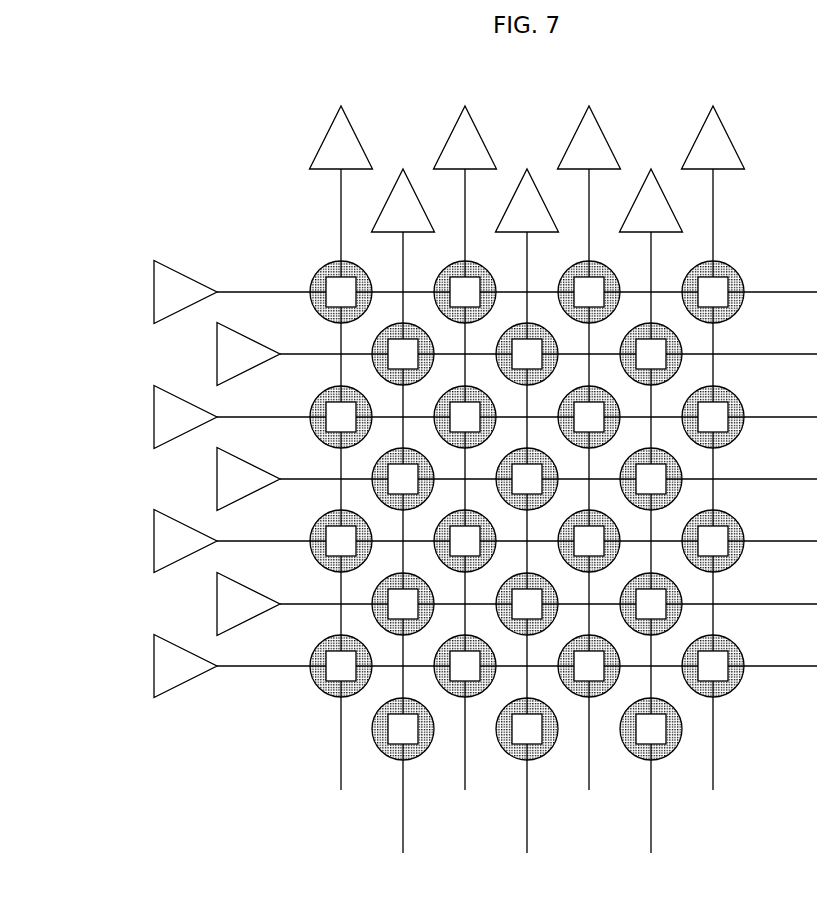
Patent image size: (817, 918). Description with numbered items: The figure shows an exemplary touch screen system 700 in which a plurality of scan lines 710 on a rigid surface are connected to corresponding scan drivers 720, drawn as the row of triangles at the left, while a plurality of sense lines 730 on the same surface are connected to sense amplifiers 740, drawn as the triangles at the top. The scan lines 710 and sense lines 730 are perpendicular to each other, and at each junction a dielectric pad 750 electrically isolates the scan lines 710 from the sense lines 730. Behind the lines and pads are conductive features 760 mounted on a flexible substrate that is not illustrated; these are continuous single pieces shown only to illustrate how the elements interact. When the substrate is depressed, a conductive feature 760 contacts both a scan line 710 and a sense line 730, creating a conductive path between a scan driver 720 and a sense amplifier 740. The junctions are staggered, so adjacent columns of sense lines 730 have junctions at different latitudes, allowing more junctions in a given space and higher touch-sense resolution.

The touch screen system 700 is at (258, 170).
The scan lines 710 is at (228, 668).
The scan drivers 720 is at (154, 297).
The sense lines 730 is at (341, 193).
The sense amplifiers 740 is at (735, 151).
The dielectric pads 750 is at (738, 274).
The conductive features 760 is at (737, 437).